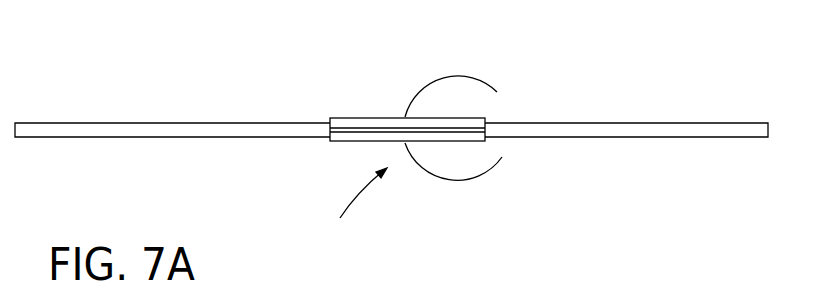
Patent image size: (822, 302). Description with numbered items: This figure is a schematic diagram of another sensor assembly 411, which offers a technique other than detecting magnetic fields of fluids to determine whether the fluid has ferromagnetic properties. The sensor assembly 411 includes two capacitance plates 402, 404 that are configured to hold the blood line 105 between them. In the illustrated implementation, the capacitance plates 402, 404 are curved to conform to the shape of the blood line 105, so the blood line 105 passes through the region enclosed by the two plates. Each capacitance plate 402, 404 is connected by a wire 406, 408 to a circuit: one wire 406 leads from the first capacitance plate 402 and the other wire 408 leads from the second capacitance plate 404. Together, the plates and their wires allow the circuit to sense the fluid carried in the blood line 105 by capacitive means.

The blood line 105 is at (670, 122).
The capacitance plate 402 is at (363, 117).
The capacitance plate 404 is at (352, 142).
The wire 406 is at (460, 72).
The wire 408 is at (458, 183).
The sensor assembly 411 is at (349, 208).